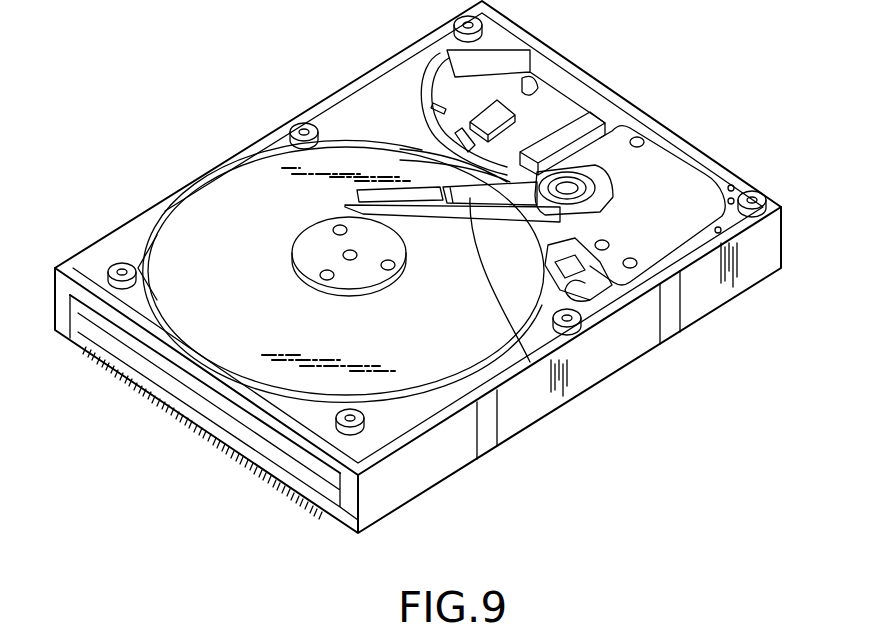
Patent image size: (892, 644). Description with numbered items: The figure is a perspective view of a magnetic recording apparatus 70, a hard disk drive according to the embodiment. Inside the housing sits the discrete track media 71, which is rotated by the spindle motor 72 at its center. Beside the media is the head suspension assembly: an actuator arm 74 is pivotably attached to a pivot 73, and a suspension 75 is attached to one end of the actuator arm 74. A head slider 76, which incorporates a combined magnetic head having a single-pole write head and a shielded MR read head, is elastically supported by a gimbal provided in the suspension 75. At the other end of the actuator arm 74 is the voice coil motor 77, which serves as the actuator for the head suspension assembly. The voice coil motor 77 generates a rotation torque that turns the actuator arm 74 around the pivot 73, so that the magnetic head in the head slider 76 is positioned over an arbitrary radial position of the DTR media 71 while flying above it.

The magnetic recording apparatus 70 is at (86, 266).
The discrete track media 71 is at (228, 200).
The spindle motor 72 is at (307, 263).
The pivot 73 is at (567, 185).
The actuator arm 74 is at (558, 340).
The suspension 75 is at (420, 218).
The head slider 76 is at (380, 275).
The voice coil motor 77 is at (693, 191).